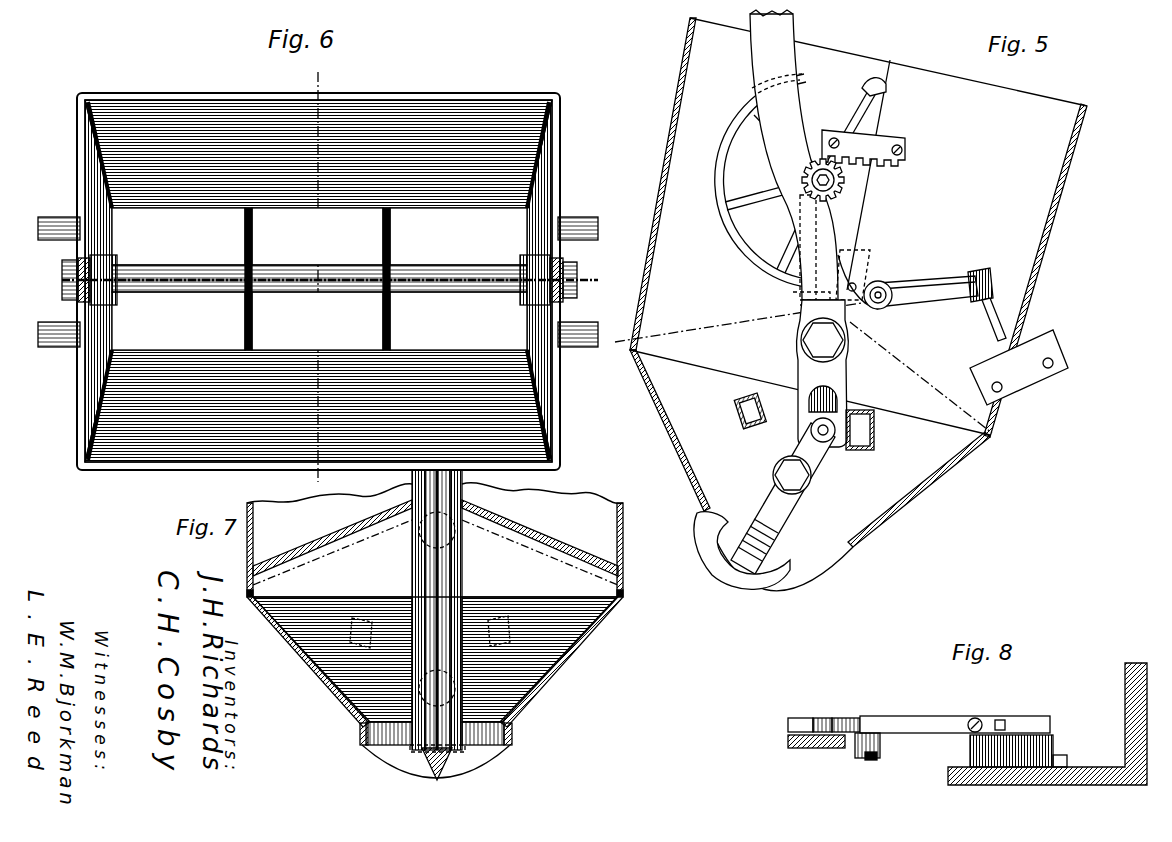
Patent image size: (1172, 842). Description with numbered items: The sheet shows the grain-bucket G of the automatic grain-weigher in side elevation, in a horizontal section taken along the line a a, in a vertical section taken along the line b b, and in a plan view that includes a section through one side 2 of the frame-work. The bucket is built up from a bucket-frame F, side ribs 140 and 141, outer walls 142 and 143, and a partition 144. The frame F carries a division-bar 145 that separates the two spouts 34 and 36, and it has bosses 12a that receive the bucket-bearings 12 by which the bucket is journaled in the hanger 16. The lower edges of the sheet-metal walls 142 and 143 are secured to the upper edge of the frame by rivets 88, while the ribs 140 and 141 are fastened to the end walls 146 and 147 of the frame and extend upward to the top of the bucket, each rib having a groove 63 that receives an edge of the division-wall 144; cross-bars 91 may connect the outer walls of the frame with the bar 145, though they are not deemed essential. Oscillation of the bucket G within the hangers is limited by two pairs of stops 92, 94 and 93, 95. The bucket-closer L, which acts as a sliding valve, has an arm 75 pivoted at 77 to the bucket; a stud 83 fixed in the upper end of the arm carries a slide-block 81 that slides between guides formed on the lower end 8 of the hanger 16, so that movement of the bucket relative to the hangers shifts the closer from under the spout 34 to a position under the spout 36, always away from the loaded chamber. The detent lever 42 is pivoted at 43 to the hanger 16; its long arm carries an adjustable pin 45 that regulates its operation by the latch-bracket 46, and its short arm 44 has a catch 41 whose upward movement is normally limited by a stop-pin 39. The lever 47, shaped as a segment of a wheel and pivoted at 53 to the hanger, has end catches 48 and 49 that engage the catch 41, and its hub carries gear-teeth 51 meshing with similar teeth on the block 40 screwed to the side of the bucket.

In FIG. 8, the side of the frame-work 2 is at (1050, 782).
In FIG. 5, the lower end of hanger 8 is at (843, 426).
In FIG. 5, the bucket-bearing 12 is at (822, 342).
In FIG. 6, the boss 12a is at (62, 272).
In FIG. 5, the hanger 16 is at (762, 58).
In FIG. 8, the hanger 16 is at (825, 750).
In FIG. 6, the spout 34 is at (458, 321).
In FIG. 7, the spout 34 is at (385, 766).
In FIG. 6, the spout 36 is at (178, 236).
In FIG. 7, the spout 36 is at (248, 582).
In FIG. 5, the spout 36 is at (822, 570).
In FIG. 5, the stop-pin 39 is at (854, 283).
In FIG. 8, the stop-pin 39 is at (855, 718).
In FIG. 5, the block 40 is at (884, 150).
In FIG. 5, the catch 41 is at (826, 290).
In FIG. 8, the catch 41 is at (822, 726).
In FIG. 5, the detent latch or lever 42 is at (925, 288).
In FIG. 8, the detent latch or lever 42 is at (932, 724).
In FIG. 5, the pivot 43 is at (882, 306).
In FIG. 8, the pivot 43 is at (877, 762).
In FIG. 5, the short arm 44 is at (796, 298).
In FIG. 8, the short arm 44 is at (800, 726).
In FIG. 5, the adjustable pin 45 is at (994, 322).
In FIG. 8, the adjustable pin 45 is at (1002, 722).
In FIG. 5, the latch-bracket 46 is at (1030, 375).
In FIG. 8, the latch-bracket 46 is at (1038, 754).
In FIG. 5, the lever 47 is at (720, 196).
In FIG. 5, the end catch 48 is at (811, 290).
In FIG. 5, the end catch 49 is at (860, 82).
In FIG. 5, the gear-teeth 51 is at (846, 180).
In FIG. 5, the pivot 53 is at (811, 179).
In FIG. 6, the groove 63 is at (62, 290).
In FIG. 5, the closer-arm 75 is at (770, 534).
In FIG. 5, the pivot 77 is at (810, 474).
In FIG. 5, the slide-block 81 is at (835, 443).
In FIG. 5, the stud 83 is at (810, 432).
In FIG. 7, the fastening 88 is at (623, 578).
In FIG. 6, the cross-bar 91 is at (251, 318).
In FIG. 7, the cross-bar 91 is at (358, 739).
In FIG. 6, the stop 92 is at (585, 228).
In FIG. 5, the stop 92 is at (874, 432).
In FIG. 5, the stop 93 is at (738, 407).
In FIG. 6, the stop 94 is at (52, 228).
In FIG. 6, the stop 95 is at (48, 340).
In FIG. 6, the side rib 140 is at (112, 256).
In FIG. 7, the side rib 140 is at (455, 576).
In FIG. 6, the side rib 141 is at (526, 262).
In FIG. 6, the outer wall 142 is at (381, 98).
In FIG. 7, the outer wall 142 is at (623, 532).
In FIG. 5, the outer wall 142 is at (1020, 96).
In FIG. 6, the outer wall 143 is at (128, 470).
In FIG. 7, the outer wall 143 is at (248, 504).
In FIG. 6, the partition 144 is at (363, 272).
In FIG. 7, the partition 144 is at (432, 580).
In FIG. 6, the division-bar 145 is at (188, 294).
In FIG. 7, the division-bar 145 is at (440, 781).
In FIG. 6, the end wall 146 is at (98, 186).
In FIG. 6, the end wall 147 is at (547, 190).
In FIG. 7, the end wall 147 is at (543, 548).
In FIG. 6, the grain-bucket G is at (206, 77).
In FIG. 7, the grain-bucket G is at (642, 541).
In FIG. 5, the grain-bucket G is at (858, 227).
In FIG. 6, the bucket-frame F is at (278, 190).
In FIG. 7, the bucket-frame F is at (435, 671).
In FIG. 5, the bucket-frame F is at (810, 448).
In FIG. 5, the bucket-closer L is at (742, 575).
In FIG. 5, the section line a a is at (815, 370).
In FIG. 6, the section line b b is at (324, 276).